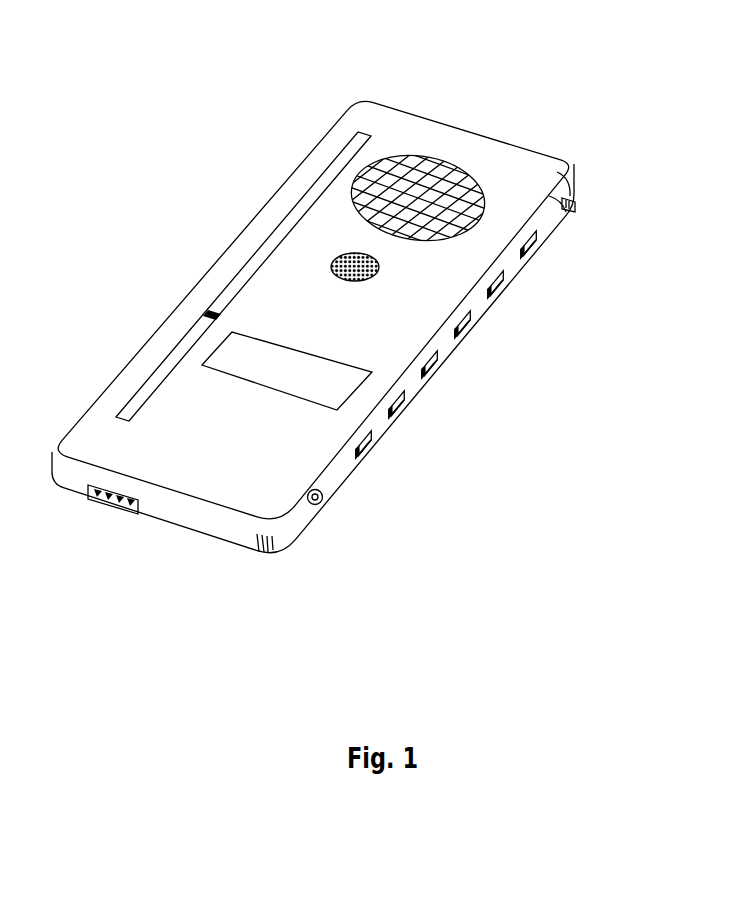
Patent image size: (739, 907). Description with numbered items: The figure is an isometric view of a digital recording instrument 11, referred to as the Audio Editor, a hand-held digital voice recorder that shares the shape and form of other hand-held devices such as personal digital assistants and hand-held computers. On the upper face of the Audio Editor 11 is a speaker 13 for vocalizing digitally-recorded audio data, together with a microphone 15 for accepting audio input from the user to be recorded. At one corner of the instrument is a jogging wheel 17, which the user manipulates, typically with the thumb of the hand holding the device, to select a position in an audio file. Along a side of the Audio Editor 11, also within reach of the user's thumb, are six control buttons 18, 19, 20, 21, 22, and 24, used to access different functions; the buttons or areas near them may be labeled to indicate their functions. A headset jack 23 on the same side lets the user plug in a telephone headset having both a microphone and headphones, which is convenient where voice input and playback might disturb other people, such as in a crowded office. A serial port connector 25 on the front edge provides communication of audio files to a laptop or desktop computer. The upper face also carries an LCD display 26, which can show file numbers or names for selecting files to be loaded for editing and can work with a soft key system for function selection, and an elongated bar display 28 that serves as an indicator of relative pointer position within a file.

The digital recording instrument 11 is at (268, 72).
The speaker 13 is at (422, 170).
The microphone 15 is at (360, 253).
The jogging wheel 17 is at (577, 197).
The control button 18 is at (537, 243).
The control button 19 is at (505, 286).
The control button 20 is at (472, 326).
The control button 21 is at (438, 366).
The control button 22 is at (405, 404).
The headset jack 23 is at (323, 497).
The control button 24 is at (372, 444).
The serial port connector 25 is at (112, 503).
The LCD display 26 is at (285, 358).
The bar display 28 is at (262, 243).